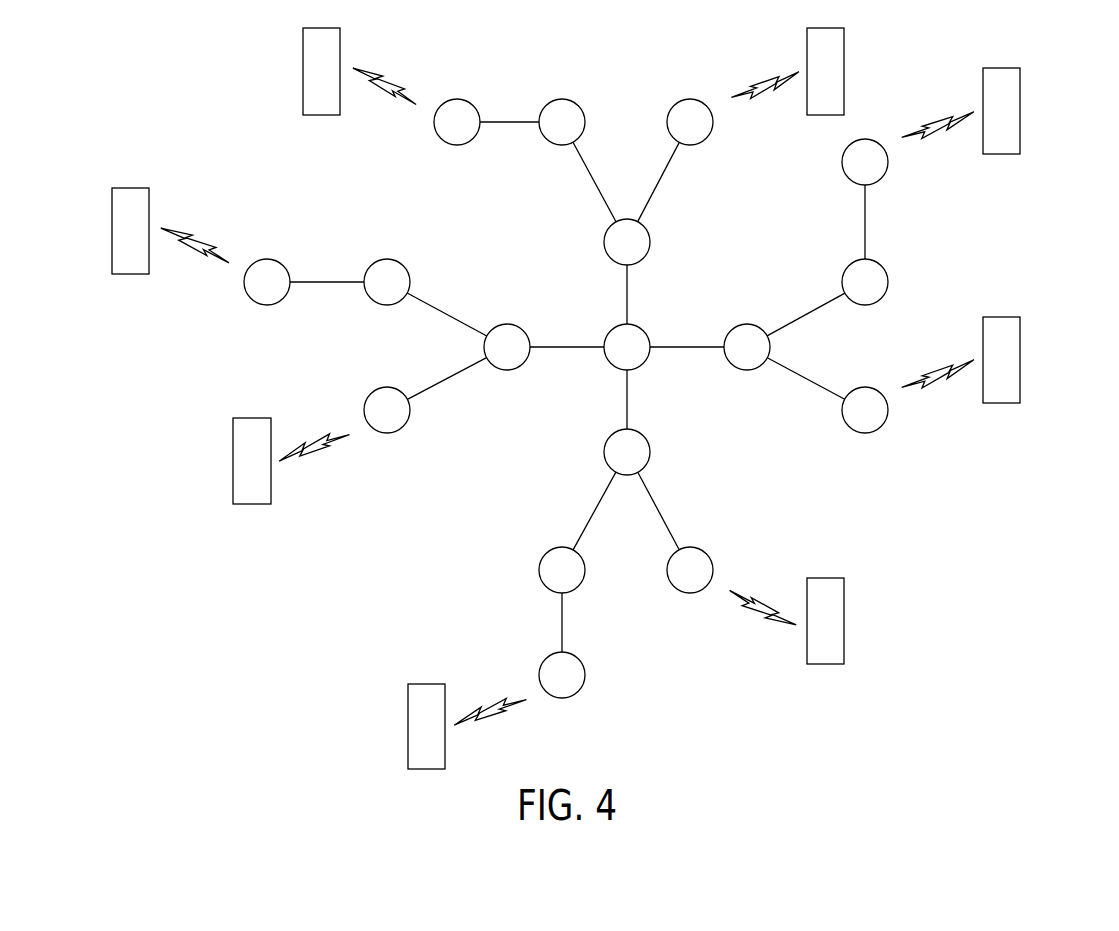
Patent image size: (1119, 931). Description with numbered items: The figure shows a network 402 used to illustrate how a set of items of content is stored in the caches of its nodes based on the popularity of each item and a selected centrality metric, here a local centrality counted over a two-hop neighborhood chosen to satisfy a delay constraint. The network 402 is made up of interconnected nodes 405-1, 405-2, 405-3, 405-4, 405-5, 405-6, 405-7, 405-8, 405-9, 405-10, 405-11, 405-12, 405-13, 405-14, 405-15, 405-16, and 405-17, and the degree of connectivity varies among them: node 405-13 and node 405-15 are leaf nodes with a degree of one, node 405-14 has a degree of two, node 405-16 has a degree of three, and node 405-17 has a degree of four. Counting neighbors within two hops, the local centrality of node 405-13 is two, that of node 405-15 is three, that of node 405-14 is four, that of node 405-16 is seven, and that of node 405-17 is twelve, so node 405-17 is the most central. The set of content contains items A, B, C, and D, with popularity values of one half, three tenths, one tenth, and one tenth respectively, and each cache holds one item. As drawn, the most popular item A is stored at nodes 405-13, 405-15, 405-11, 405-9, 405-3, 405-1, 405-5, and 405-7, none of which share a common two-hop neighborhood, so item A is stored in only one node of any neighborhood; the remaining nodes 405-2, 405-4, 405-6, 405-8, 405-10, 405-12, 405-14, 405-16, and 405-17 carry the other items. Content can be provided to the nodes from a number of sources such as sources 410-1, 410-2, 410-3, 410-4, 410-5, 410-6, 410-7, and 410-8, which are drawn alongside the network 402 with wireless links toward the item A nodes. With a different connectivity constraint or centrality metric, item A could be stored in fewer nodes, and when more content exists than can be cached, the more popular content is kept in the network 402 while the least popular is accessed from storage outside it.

The network 402 is at (148, 52).
The node 405-1 is at (269, 259).
The node 405-2 is at (389, 259).
The node 405-3 is at (386, 387).
The node 405-4 is at (509, 324).
The node 405-5 is at (459, 99).
The node 405-6 is at (560, 146).
The node 405-7 is at (688, 99).
The node 405-8 is at (650, 242).
The node 405-9 is at (585, 675).
The node 405-10 is at (563, 547).
The node 405-11 is at (691, 548).
The node 405-12 is at (650, 452).
The node 405-13 is at (888, 162).
The node 405-14 is at (888, 282).
The node 405-15 is at (888, 410).
The node 405-16 is at (742, 324).
The node 405-17 is at (643, 363).
The source 410-1 is at (303, 72).
The source 410-2 is at (112, 232).
The source 410-3 is at (233, 463).
The source 410-4 is at (408, 727).
The source 410-5 is at (844, 622).
The source 410-6 is at (1020, 362).
The source 410-7 is at (1020, 112).
The source 410-8 is at (844, 72).